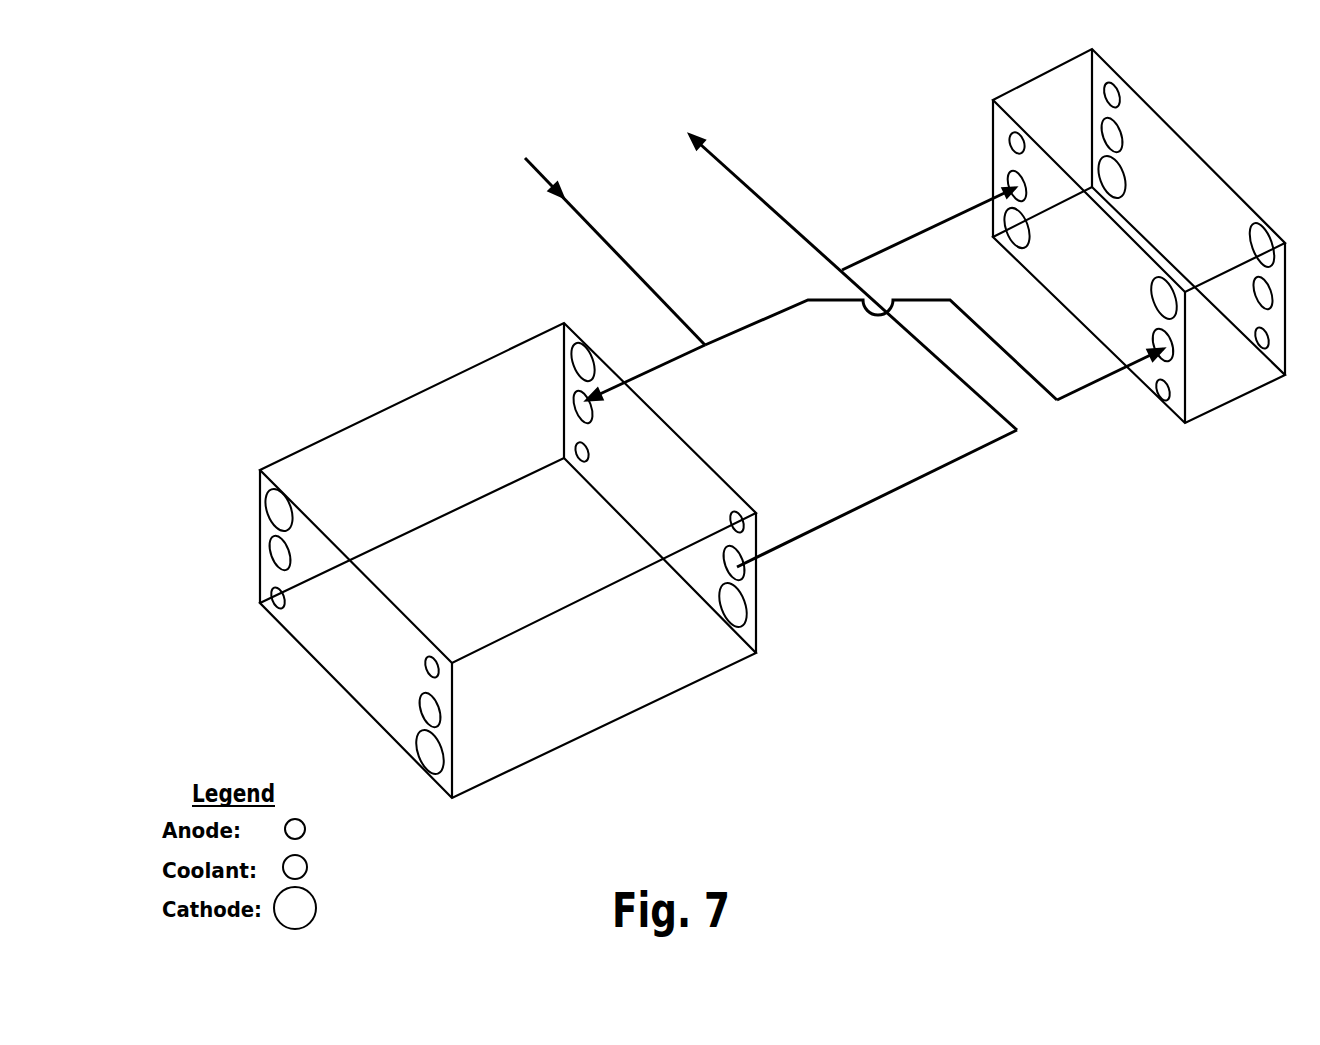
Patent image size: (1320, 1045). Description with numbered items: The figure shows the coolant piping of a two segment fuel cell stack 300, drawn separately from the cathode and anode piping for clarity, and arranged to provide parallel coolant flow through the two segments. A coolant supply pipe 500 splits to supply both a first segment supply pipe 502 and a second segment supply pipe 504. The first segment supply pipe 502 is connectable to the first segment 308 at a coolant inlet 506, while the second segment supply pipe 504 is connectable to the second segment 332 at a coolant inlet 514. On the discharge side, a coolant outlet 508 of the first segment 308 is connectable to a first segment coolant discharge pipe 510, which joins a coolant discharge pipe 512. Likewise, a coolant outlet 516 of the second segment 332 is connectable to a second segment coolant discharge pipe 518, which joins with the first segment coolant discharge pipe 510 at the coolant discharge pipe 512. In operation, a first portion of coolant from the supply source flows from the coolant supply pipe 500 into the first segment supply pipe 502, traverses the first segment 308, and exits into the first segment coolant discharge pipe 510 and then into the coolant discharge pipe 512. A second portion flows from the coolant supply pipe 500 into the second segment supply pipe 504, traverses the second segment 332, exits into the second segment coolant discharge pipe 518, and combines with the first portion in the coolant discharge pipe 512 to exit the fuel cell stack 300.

The fuel cell stack 300 is at (434, 148).
The first segment 308 is at (342, 468).
The second segment 332 is at (1032, 92).
The coolant supply pipe 500 is at (620, 248).
The first segment supply pipe 502 is at (630, 382).
The second segment supply pipe 504 is at (745, 328).
The coolant inlet 506 is at (578, 400).
The coolant outlet 508 is at (740, 577).
The first segment coolant discharge pipe 510 is at (853, 508).
The coolant discharge pipe 512 is at (780, 213).
The coolant inlet 514 is at (1183, 377).
The coolant outlet 516 is at (1013, 183).
The second segment coolant discharge pipe 518 is at (913, 233).